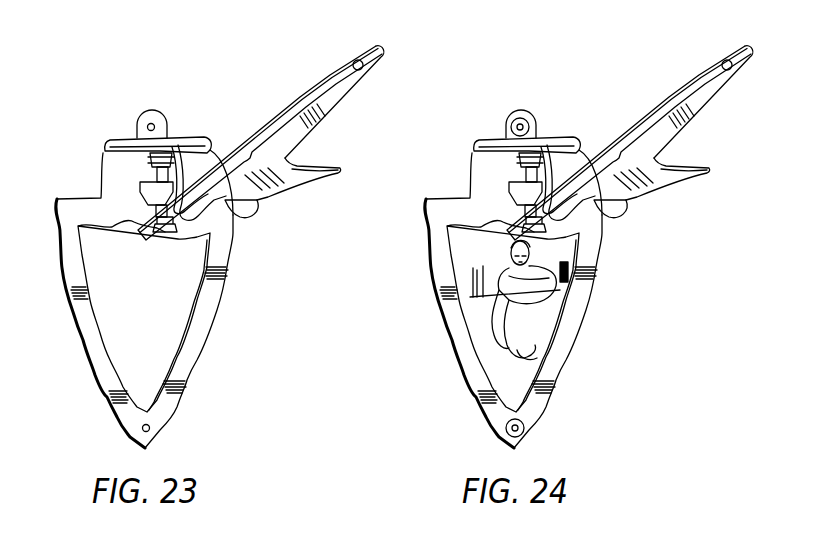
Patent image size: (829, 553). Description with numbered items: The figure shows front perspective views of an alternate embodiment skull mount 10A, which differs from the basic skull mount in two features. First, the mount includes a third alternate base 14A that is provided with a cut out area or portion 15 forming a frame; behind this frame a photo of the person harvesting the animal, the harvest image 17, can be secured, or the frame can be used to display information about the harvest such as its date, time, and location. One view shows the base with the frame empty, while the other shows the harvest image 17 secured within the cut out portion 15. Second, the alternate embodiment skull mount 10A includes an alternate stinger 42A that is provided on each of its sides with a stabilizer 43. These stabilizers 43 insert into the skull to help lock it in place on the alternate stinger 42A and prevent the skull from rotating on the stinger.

In FIG. 23, the alternate embodiment skull mount 10A is at (219, 238).
In FIG. 24, the alternate embodiment skull mount 10A is at (569, 242).
In FIG. 23, the third alternate base 14A is at (212, 298).
In FIG. 24, the third alternate base 14A is at (546, 279).
In FIG. 23, the cut out area or portion 15 is at (170, 328).
In FIG. 24, the cut out area or portion 15 is at (513, 316).
In FIG. 24, the harvest image 17 is at (476, 311).
In FIG. 23, the alternate stinger 42A is at (273, 120).
In FIG. 24, the alternate stinger 42A is at (630, 138).
In FIG. 23, the stabilizer 43 is at (318, 177).
In FIG. 24, the stabilizer 43 is at (637, 162).